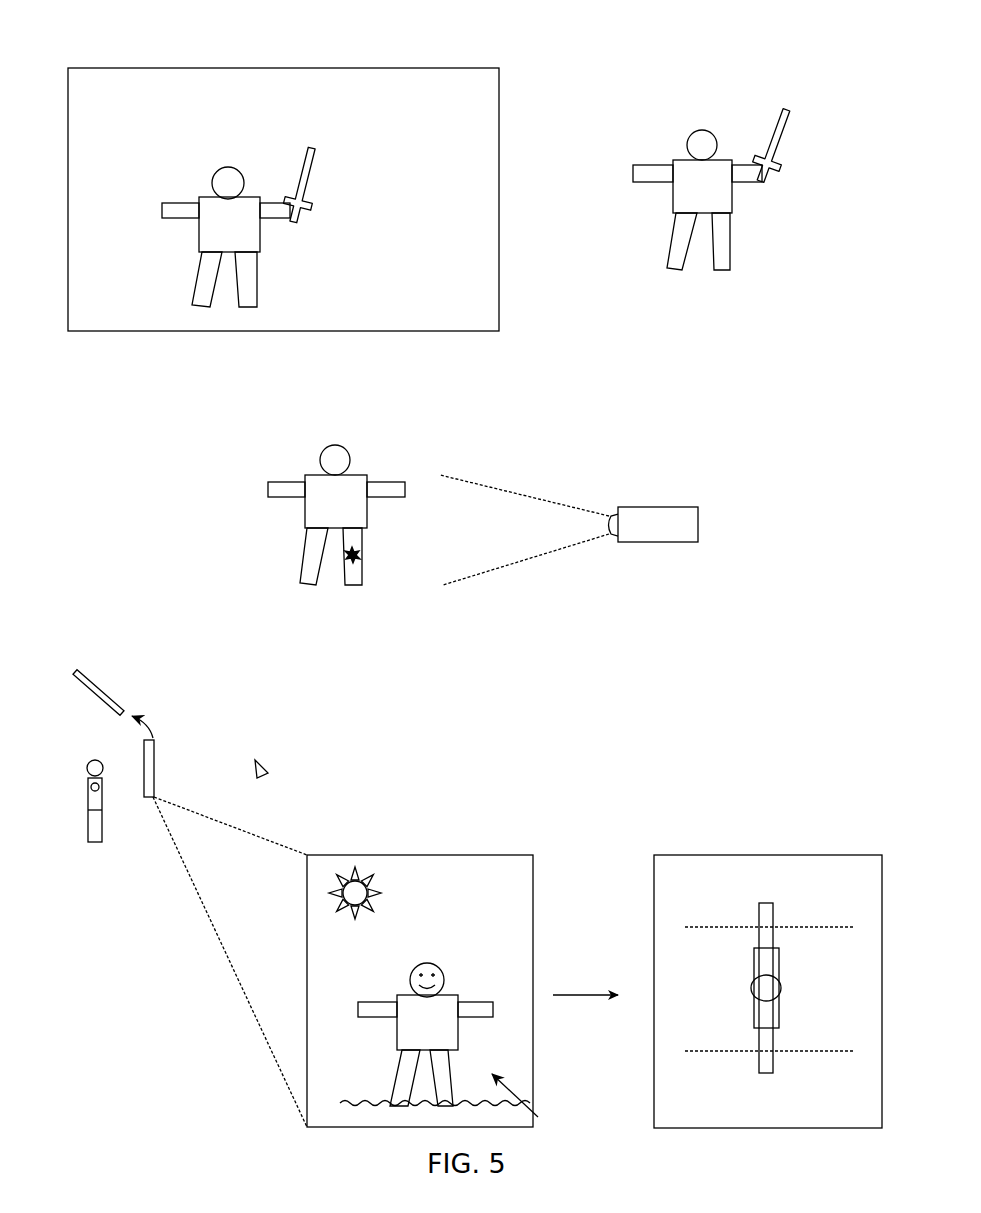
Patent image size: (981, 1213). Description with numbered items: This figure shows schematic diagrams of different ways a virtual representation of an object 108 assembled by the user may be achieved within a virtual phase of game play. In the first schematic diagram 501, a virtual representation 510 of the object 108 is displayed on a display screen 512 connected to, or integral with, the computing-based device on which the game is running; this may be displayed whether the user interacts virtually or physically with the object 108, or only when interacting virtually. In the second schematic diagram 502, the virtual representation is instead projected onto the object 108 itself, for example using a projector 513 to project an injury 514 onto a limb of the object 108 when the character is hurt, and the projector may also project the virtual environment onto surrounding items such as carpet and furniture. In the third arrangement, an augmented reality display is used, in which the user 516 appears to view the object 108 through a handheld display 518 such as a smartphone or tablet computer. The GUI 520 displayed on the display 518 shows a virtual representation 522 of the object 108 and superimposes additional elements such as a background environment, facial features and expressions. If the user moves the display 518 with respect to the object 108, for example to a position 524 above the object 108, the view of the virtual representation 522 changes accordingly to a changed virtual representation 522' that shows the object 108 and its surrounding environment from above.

The first schematic diagram 501 is at (676, 83).
The second schematic diagram 502 is at (523, 434).
The object 108 is at (687, 288).
The virtual representation 510 is at (312, 246).
The display screen 512 is at (385, 331).
The projector 513 is at (652, 542).
The injury 514 is at (362, 551).
The user 516 is at (268, 780).
The handheld display 518 is at (145, 806).
The GUI 520 is at (536, 1104).
The virtual representation 522 is at (425, 1017).
The changed virtual representation 522' is at (768, 991).
The position 524 is at (107, 693).